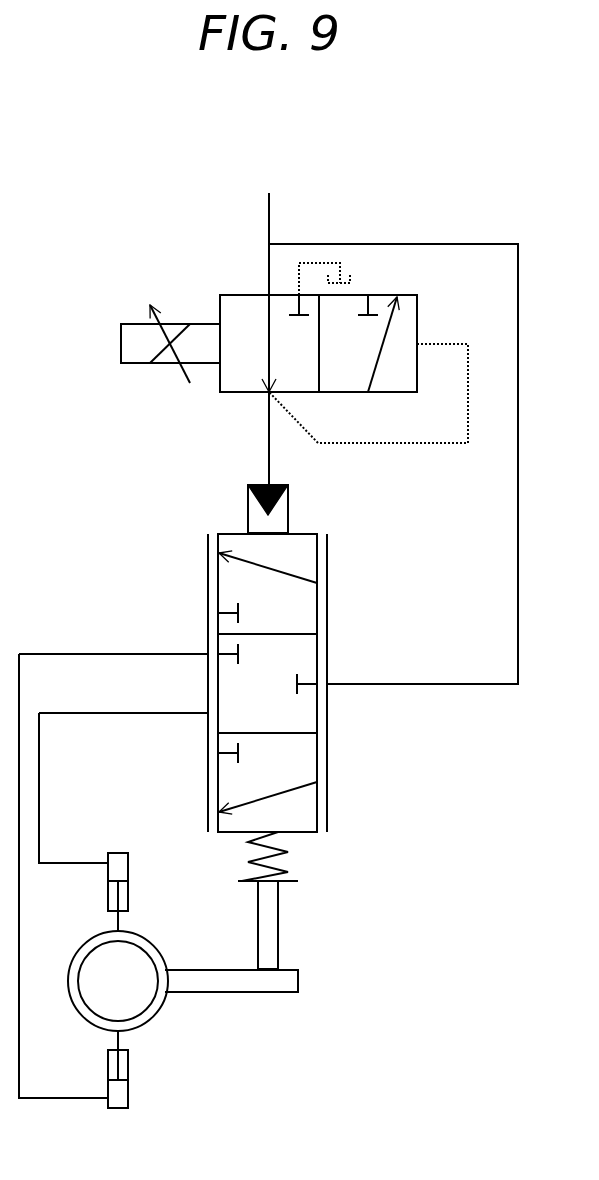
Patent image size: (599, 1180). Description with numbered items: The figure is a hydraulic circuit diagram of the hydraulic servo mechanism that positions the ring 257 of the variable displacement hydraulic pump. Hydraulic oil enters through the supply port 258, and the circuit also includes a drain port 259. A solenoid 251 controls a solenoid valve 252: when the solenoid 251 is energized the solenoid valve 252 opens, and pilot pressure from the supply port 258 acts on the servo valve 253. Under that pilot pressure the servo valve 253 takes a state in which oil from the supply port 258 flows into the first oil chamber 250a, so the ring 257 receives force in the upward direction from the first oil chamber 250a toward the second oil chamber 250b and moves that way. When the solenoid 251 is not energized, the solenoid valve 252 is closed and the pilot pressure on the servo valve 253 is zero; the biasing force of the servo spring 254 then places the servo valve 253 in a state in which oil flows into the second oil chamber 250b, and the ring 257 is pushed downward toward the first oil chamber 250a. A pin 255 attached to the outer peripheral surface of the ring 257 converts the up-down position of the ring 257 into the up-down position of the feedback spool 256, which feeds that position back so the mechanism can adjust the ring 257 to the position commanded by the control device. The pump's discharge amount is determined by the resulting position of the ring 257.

The first oil chamber 250a is at (105, 1040).
The second oil chamber 250b is at (107, 925).
The solenoid 251 is at (133, 363).
The solenoid valve 252 is at (235, 392).
The servo valve 253 is at (303, 542).
The servo spring 254 is at (288, 851).
The pin 255 is at (245, 992).
The feedback spool 256 is at (268, 927).
The ring 257 is at (152, 940).
The supply port 258 is at (268, 228).
The drain port 259 is at (299, 263).